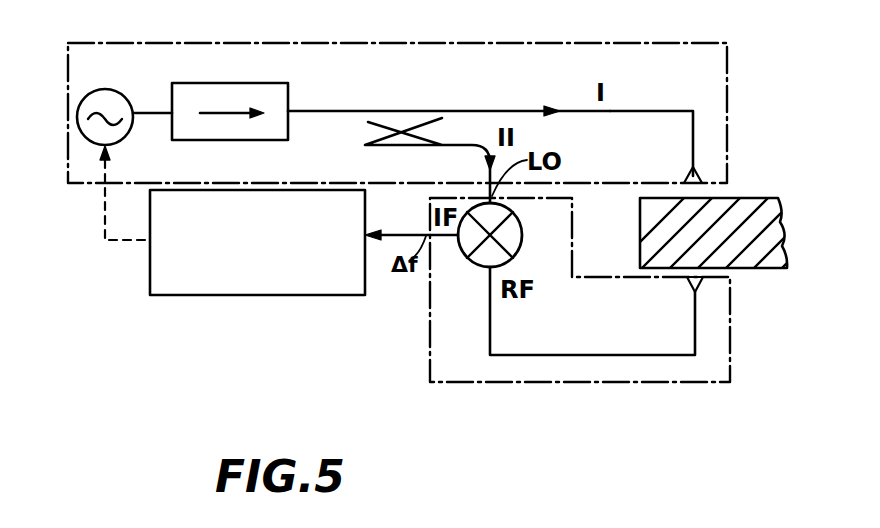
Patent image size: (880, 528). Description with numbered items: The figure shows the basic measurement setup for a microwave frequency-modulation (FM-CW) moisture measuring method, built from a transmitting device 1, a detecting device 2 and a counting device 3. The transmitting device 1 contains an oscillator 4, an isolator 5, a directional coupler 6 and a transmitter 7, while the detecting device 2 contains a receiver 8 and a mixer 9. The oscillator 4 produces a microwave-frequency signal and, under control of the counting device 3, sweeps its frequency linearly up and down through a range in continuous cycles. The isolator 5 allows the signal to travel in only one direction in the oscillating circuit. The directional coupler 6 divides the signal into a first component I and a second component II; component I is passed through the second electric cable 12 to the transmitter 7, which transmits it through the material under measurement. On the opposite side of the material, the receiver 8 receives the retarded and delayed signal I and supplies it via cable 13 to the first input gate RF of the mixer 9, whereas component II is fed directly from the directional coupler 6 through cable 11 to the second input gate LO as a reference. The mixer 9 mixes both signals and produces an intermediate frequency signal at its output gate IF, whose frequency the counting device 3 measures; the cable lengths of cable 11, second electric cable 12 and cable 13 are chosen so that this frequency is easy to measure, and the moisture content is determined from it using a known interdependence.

The transmitting device 1 is at (282, 44).
The detecting device 2 is at (598, 384).
The counting device 3 is at (270, 252).
The oscillator 4 is at (126, 99).
The isolator 5 is at (289, 98).
The directional coupler 6 is at (453, 111).
The transmitter 7 is at (701, 178).
The receiver 8 is at (703, 283).
The mixer 9 is at (522, 240).
The cable 11 is at (480, 146).
The second electric cable 12 is at (653, 111).
The cable 13 is at (623, 331).